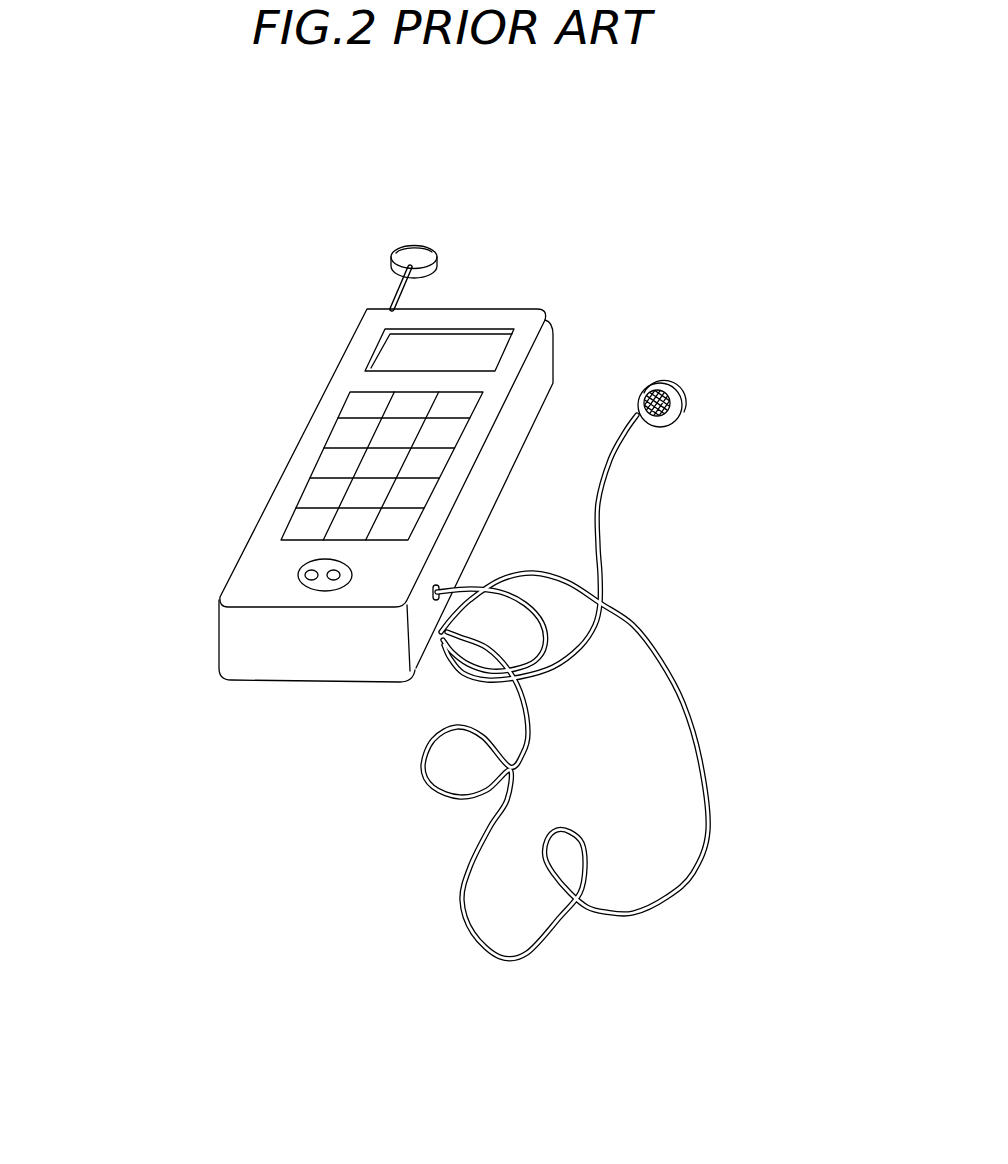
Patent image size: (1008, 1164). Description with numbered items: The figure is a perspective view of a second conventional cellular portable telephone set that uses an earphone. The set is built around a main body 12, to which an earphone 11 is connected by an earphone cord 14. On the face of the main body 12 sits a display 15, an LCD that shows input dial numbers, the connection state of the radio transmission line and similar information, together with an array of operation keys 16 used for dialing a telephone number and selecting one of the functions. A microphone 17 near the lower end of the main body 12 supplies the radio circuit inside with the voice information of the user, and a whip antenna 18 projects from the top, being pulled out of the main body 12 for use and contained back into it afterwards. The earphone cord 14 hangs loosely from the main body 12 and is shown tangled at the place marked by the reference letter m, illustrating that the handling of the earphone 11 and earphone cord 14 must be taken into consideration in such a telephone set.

The earphone 11 is at (682, 412).
The main body 12 is at (553, 350).
The earphone cord 14 is at (683, 703).
The display 15 is at (458, 343).
The operation keys 16 is at (357, 407).
The microphone 17 is at (318, 588).
The whip antenna 18 is at (395, 286).
The tangle m is at (443, 650).